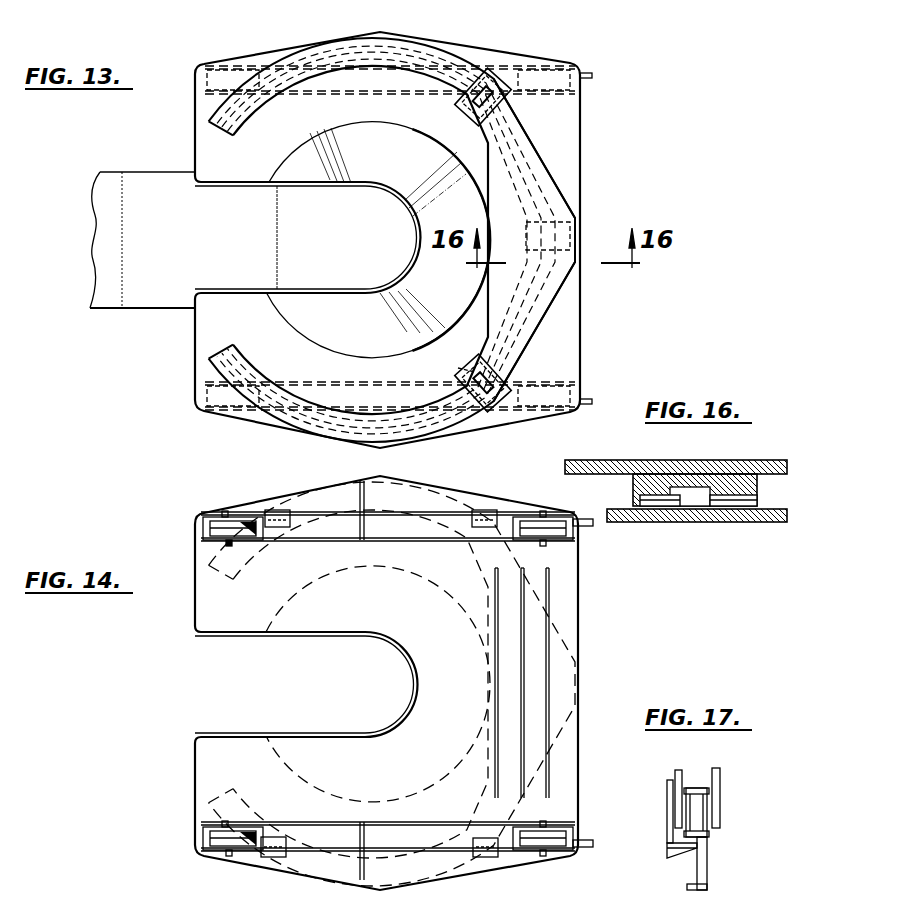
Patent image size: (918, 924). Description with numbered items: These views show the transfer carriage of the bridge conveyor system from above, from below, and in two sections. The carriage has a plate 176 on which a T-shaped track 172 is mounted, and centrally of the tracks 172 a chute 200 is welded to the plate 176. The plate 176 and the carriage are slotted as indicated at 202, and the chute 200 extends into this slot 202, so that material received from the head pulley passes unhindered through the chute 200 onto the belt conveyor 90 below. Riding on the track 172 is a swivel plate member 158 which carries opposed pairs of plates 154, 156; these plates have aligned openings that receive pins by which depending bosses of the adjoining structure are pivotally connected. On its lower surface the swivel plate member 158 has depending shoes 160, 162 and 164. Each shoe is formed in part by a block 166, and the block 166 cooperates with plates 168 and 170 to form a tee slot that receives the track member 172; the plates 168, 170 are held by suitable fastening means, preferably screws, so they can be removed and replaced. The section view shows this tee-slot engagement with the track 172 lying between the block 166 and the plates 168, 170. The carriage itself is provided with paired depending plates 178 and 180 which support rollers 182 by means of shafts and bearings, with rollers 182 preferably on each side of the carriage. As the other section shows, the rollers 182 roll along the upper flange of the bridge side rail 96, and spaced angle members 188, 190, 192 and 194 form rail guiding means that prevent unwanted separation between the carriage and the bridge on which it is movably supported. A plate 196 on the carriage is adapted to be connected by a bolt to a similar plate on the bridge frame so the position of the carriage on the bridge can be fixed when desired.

In FIG. 13, the belt conveyor 90 is at (202, 250).
In FIG. 13, the plates 154 is at (492, 360).
In FIG. 13, the plates 156 is at (509, 118).
In FIG. 13, the swivel plate member 158 is at (556, 174).
In FIG. 16, the swivel plate member 158 is at (632, 468).
In FIG. 13, the depending shoe 160 is at (456, 367).
In FIG. 13, the depending shoe 162 is at (578, 232).
In FIG. 13, the depending shoe 164 is at (511, 58).
In FIG. 16, the block 166 is at (758, 480).
In FIG. 16, the plate 168 is at (749, 506).
In FIG. 16, the plate 170 is at (640, 501).
In FIG. 13, the track member 172 is at (334, 50).
In FIG. 16, the track member 172 is at (702, 505).
In FIG. 14, the plate 176 is at (562, 603).
In FIG. 14, the depending plate 178 is at (438, 506).
In FIG. 17, the depending plate 178 is at (688, 770).
In FIG. 14, the depending plate 180 is at (406, 822).
In FIG. 14, the rollers 182 is at (222, 522).
In FIG. 17, the rollers 182 is at (698, 806).
In FIG. 14, the angle member 188 is at (280, 512).
In FIG. 17, the angle member 188 is at (668, 812).
In FIG. 14, the angle member 190 is at (490, 510).
In FIG. 14, the angle member 192 is at (278, 848).
In FIG. 14, the angle member 194 is at (487, 857).
In FIG. 14, the plate 196 is at (583, 848).
In FIG. 13, the chute 200 is at (312, 140).
In FIG. 14, the chute 200 is at (307, 598).
In FIG. 14, the slot 202 is at (197, 635).
In FIG. 17, the side rail 96 is at (705, 870).